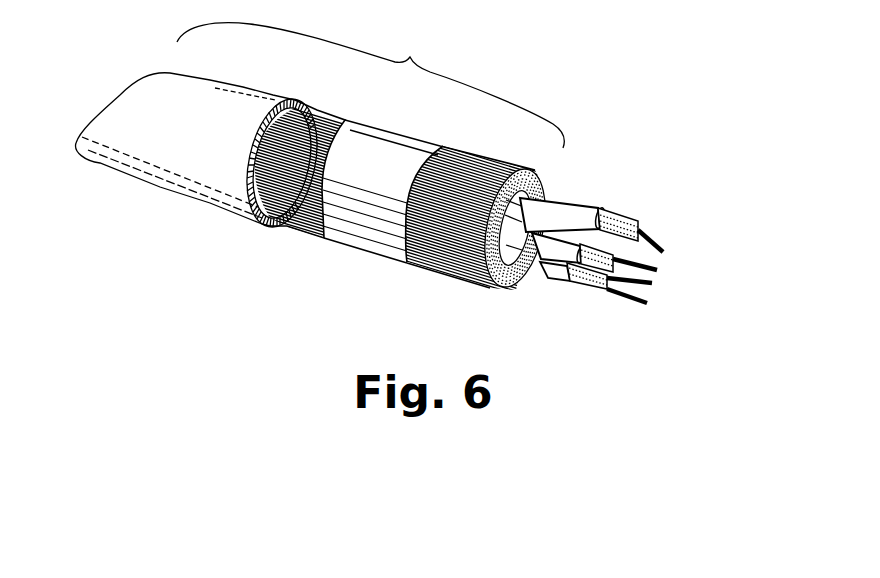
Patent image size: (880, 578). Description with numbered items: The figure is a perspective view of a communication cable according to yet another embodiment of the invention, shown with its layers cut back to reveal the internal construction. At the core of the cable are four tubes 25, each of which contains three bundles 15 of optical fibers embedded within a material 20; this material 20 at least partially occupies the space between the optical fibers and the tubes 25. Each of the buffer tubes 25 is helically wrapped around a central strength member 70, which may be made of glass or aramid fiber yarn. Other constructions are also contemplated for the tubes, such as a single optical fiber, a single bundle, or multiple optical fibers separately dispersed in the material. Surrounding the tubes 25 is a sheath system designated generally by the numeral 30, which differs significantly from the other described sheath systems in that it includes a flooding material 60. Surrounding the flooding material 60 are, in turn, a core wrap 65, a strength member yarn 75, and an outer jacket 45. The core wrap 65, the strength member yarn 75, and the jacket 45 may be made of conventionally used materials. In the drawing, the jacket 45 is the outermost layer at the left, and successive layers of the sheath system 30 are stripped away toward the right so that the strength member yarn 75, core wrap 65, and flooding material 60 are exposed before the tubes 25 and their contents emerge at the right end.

The bundles of optical fibers 15 is at (664, 255).
The material 20 is at (633, 231).
The tubes 25 is at (558, 221).
The sheath system 30 is at (370, 83).
The jacket 45 is at (208, 208).
The flooding material 60 is at (449, 272).
The core wrap 65 is at (359, 241).
The central strength member 70 is at (657, 279).
The strength member yarn 75 is at (300, 228).